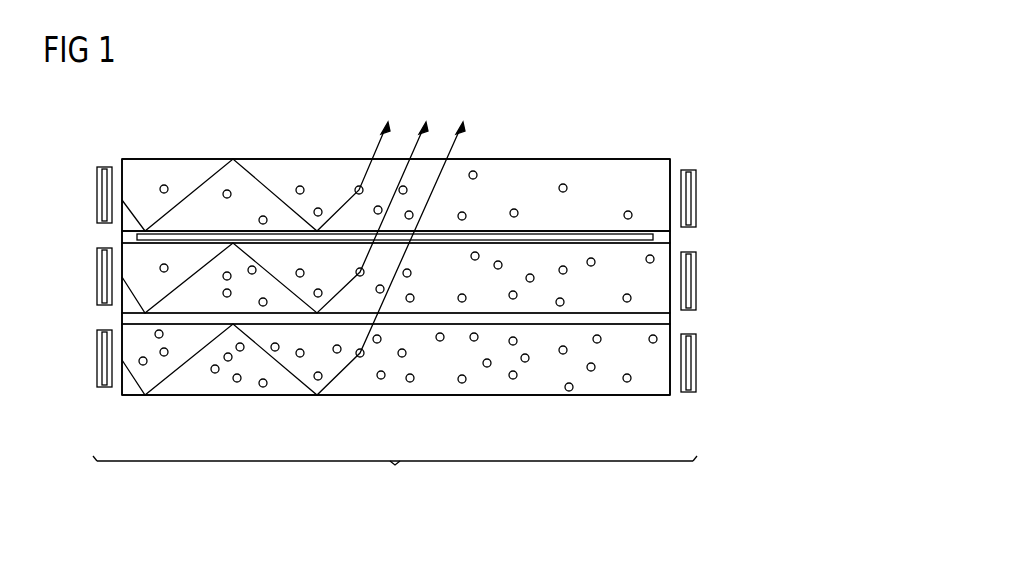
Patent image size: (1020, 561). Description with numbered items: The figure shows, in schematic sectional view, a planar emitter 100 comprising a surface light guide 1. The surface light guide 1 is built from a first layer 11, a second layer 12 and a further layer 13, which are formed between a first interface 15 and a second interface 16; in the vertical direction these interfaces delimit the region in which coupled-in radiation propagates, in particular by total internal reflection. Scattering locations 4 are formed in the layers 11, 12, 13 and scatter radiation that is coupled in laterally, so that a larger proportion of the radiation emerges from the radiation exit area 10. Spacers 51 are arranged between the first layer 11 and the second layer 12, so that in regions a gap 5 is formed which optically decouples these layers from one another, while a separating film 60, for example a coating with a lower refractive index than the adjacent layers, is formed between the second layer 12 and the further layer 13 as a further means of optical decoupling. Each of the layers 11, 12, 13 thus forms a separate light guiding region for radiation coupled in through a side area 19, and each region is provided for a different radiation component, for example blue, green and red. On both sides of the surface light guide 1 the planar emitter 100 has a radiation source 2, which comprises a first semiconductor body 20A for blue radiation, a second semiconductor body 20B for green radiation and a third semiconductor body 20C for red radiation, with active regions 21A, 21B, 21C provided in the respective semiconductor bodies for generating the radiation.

The surface light guide 1 is at (636, 120).
The radiation source 2 is at (104, 159).
The scattering locations 4 is at (477, 175).
The gap 5 is at (585, 232).
The radiation exit area 10 is at (279, 159).
The first layer 11 is at (585, 170).
The second layer 12 is at (664, 309).
The further layer 13 is at (533, 391).
The first interface 15 is at (511, 160).
The second interface 16 is at (393, 394).
The side area 19 is at (119, 391).
The first semiconductor body 20A is at (97, 194).
The second semiconductor body 20B is at (97, 276).
The third semiconductor body 20C is at (97, 358).
The active region 21A is at (695, 216).
The active region 21B is at (695, 300).
The active region 21C is at (695, 382).
The spacers 51 is at (127, 238).
The separating film 60 is at (126, 318).
The planar emitter 100 is at (395, 478).